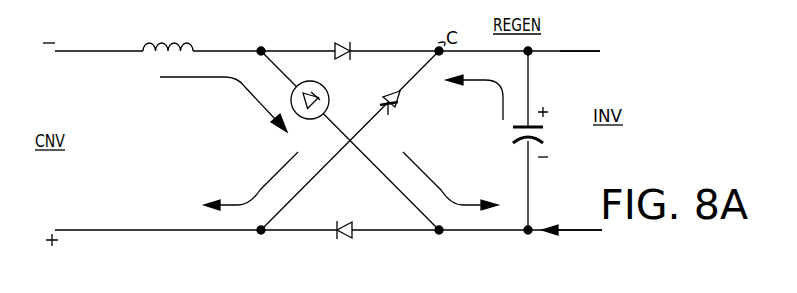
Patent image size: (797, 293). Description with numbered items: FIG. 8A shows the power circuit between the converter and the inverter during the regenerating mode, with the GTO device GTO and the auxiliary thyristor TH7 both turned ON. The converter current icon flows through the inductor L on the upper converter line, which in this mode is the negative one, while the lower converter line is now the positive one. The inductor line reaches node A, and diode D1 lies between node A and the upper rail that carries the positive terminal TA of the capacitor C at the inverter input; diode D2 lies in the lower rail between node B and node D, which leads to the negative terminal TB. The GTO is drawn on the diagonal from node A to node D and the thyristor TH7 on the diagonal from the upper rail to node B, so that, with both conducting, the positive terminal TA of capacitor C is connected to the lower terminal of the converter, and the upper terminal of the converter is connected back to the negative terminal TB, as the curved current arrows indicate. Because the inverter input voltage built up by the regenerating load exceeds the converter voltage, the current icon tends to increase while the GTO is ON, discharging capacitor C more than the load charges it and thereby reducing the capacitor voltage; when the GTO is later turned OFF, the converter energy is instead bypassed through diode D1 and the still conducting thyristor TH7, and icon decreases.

The inductor L is at (164, 56).
The converter current icon is at (196, 32).
The node A is at (262, 48).
The node B is at (257, 238).
The node D is at (437, 238).
The diode D1 is at (339, 38).
The diode D2 is at (339, 244).
The GTO device GTO is at (328, 92).
The auxiliary thyristor TH7 is at (388, 115).
The capacitor C is at (545, 133).
The positive terminal TA is at (596, 51).
The negative terminal TB is at (598, 232).